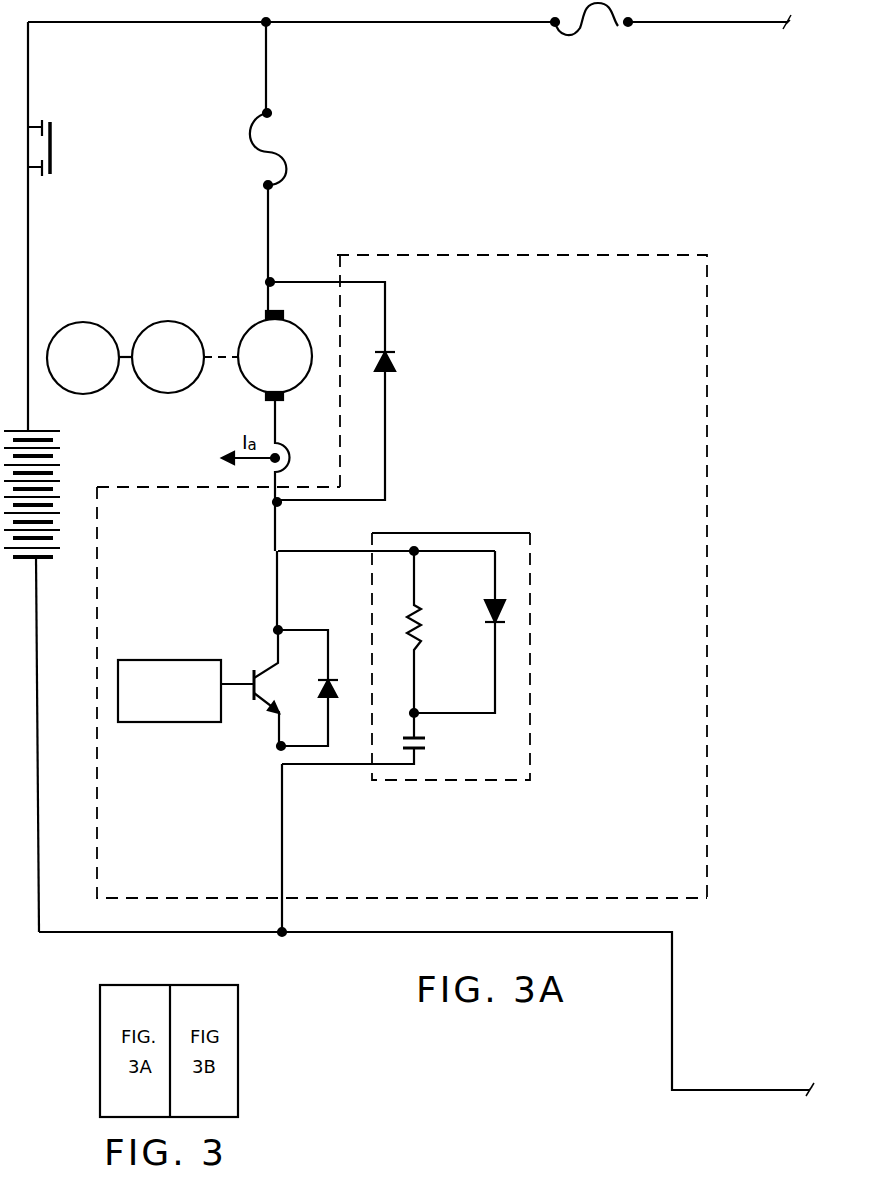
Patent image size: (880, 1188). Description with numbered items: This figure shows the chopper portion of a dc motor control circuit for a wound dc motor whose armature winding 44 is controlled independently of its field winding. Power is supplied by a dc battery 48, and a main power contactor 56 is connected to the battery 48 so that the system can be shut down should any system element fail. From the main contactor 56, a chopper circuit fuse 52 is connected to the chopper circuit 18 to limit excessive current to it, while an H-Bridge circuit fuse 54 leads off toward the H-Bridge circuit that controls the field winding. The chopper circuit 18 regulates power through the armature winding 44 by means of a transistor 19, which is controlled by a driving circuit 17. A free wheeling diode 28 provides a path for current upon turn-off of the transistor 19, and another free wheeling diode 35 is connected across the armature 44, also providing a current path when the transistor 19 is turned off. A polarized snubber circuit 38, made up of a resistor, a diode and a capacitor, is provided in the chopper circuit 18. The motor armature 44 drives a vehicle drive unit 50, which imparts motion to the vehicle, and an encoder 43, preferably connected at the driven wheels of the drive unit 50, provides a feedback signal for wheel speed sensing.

The main power contactor 56 is at (42, 120).
The chopper circuit fuse 52 is at (252, 124).
The H-Bridge circuit fuse 54 is at (560, 32).
The chopper circuit 18 is at (458, 250).
The encoder 43 is at (87, 321).
The vehicle drive unit 50 is at (165, 394).
The armature winding 44 is at (250, 328).
The dc battery 48 is at (57, 444).
The free wheeling diode 35 is at (392, 350).
The polarized snubber circuit 38 is at (462, 533).
The driving circuit 17 is at (178, 660).
The transistor 19 is at (255, 700).
The free wheeling diode 28 is at (335, 680).